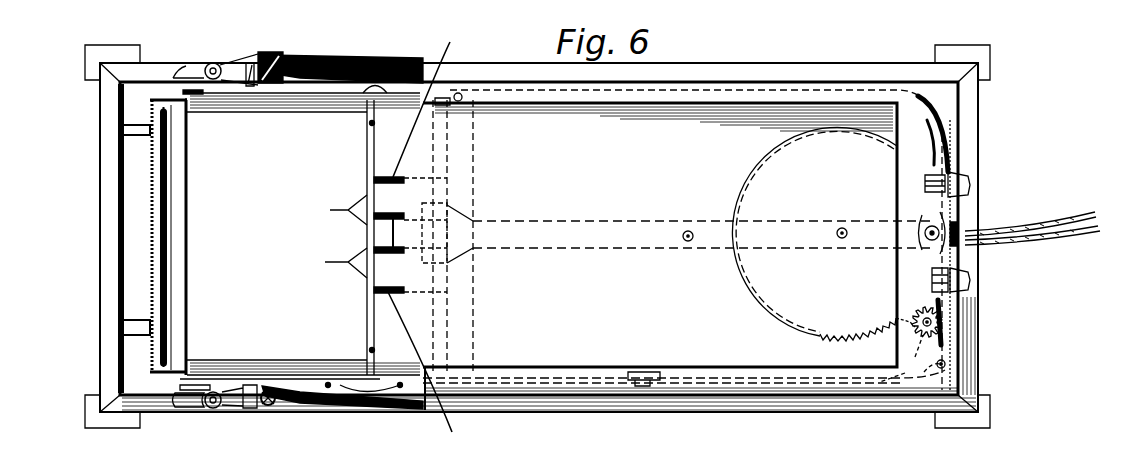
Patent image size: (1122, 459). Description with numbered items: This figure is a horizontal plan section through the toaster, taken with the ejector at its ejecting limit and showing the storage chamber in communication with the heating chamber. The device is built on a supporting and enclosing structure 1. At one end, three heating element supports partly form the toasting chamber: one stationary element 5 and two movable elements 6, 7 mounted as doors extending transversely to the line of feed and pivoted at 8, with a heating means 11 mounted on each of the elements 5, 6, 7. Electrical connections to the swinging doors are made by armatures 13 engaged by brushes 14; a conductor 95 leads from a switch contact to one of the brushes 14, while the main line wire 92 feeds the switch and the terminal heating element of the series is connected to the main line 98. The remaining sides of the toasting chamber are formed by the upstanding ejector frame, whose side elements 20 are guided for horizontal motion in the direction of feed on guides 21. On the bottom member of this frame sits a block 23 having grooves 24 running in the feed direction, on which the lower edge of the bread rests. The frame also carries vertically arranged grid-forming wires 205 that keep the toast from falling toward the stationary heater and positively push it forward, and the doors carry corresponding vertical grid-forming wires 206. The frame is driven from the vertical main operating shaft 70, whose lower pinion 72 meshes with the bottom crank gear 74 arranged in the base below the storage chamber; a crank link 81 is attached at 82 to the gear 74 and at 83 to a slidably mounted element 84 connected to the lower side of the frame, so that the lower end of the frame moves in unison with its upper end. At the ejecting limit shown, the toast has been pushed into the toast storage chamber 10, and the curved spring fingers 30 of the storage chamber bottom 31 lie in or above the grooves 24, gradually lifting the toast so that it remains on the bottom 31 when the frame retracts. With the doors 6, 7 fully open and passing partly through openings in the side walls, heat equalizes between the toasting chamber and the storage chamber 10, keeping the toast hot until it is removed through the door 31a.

The supporting and enclosing structure 1 is at (962, 130).
The stationary heating element support 5 is at (150, 265).
The movable heating element support (door) 6 is at (340, 412).
The movable heating element support (door) 7 is at (345, 68).
The pivot 8 is at (272, 56).
The toast storage chamber 10 is at (665, 148).
The heating means 11 is at (168, 248).
The armature 13 is at (249, 62).
The brush 14 is at (213, 63).
The side element of ejector frame 20 is at (426, 237).
The guide 21 is at (243, 100).
The block 23 is at (390, 327).
The grooves 24 is at (372, 233).
The fingers 30 is at (335, 236).
The bottom of toast storage chamber 31 is at (412, 136).
The door 31a is at (743, 370).
The main operating shaft 70 is at (931, 322).
The pinion 72 is at (910, 358).
The gear 74 is at (742, 280).
The crank arm or link 81 is at (705, 221).
The attachment of link to gear 82 is at (925, 242).
The attachment of link to slidable element 83 is at (685, 242).
The slidably mounted element 84 is at (594, 250).
The main line wire 92 is at (1044, 236).
The conductor 95 is at (945, 365).
The main line 98 is at (952, 148).
The grid-forming wire 205 is at (372, 123).
The grid-forming wires 206 is at (352, 93).